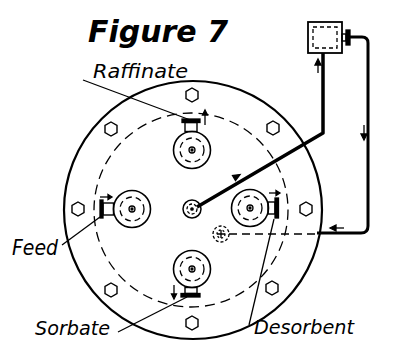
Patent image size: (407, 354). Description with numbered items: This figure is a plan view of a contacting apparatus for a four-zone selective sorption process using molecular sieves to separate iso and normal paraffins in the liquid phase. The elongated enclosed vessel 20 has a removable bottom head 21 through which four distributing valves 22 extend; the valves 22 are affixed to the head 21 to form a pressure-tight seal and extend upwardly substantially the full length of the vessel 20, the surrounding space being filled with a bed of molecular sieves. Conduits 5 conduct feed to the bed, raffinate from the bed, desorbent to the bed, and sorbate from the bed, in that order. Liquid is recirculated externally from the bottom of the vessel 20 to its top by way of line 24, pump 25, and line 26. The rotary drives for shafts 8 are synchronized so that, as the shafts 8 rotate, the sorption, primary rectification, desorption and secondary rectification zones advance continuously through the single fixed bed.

The conduits 5 is at (193, 119).
The shafts 8 is at (133, 208).
The enclosed vessel 20 is at (105, 158).
The removable bottom head 21 is at (64, 183).
The distributing valves 22 is at (176, 162).
The line 24 is at (366, 211).
The pump 25 is at (309, 55).
The line 26 is at (317, 141).